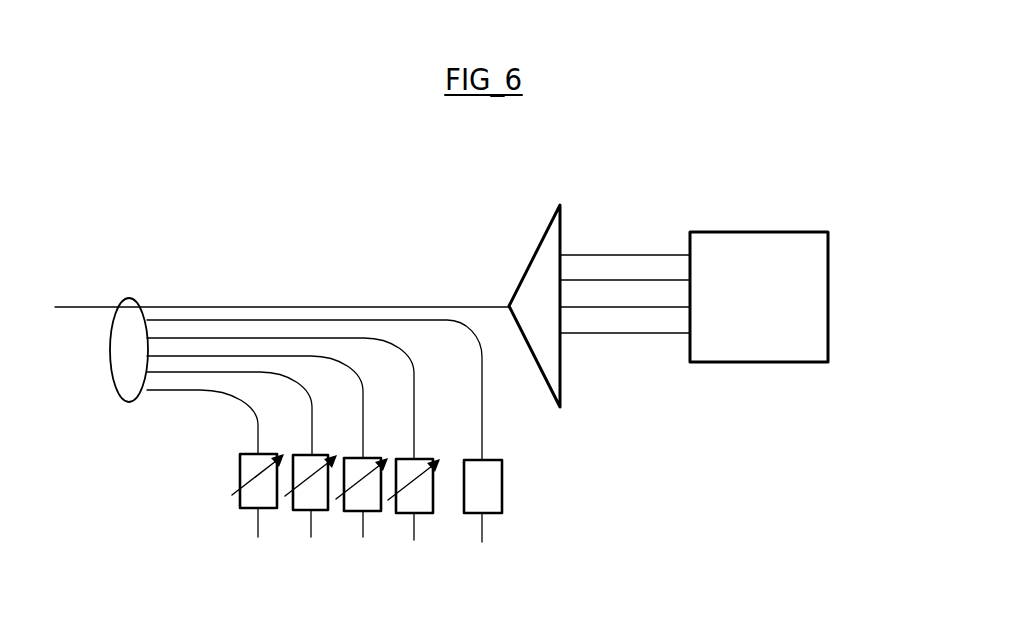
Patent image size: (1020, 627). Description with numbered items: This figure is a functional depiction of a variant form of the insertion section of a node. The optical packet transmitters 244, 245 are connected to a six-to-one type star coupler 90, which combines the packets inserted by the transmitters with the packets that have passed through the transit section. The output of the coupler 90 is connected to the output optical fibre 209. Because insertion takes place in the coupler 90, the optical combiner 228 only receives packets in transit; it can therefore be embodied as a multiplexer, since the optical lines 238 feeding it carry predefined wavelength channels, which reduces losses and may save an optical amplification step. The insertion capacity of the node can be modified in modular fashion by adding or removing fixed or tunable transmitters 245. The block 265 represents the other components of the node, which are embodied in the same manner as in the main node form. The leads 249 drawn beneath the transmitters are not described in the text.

The output optical fibre 209 is at (78, 306).
The star coupler 90 is at (128, 298).
The optical combiner 228 is at (532, 258).
The optical lines 238 is at (623, 254).
The block 265 is at (748, 231).
The optical packet transmitters 245 is at (240, 480).
The optical packet transmitter 244 is at (503, 480).
The output leads 249 is at (257, 521).